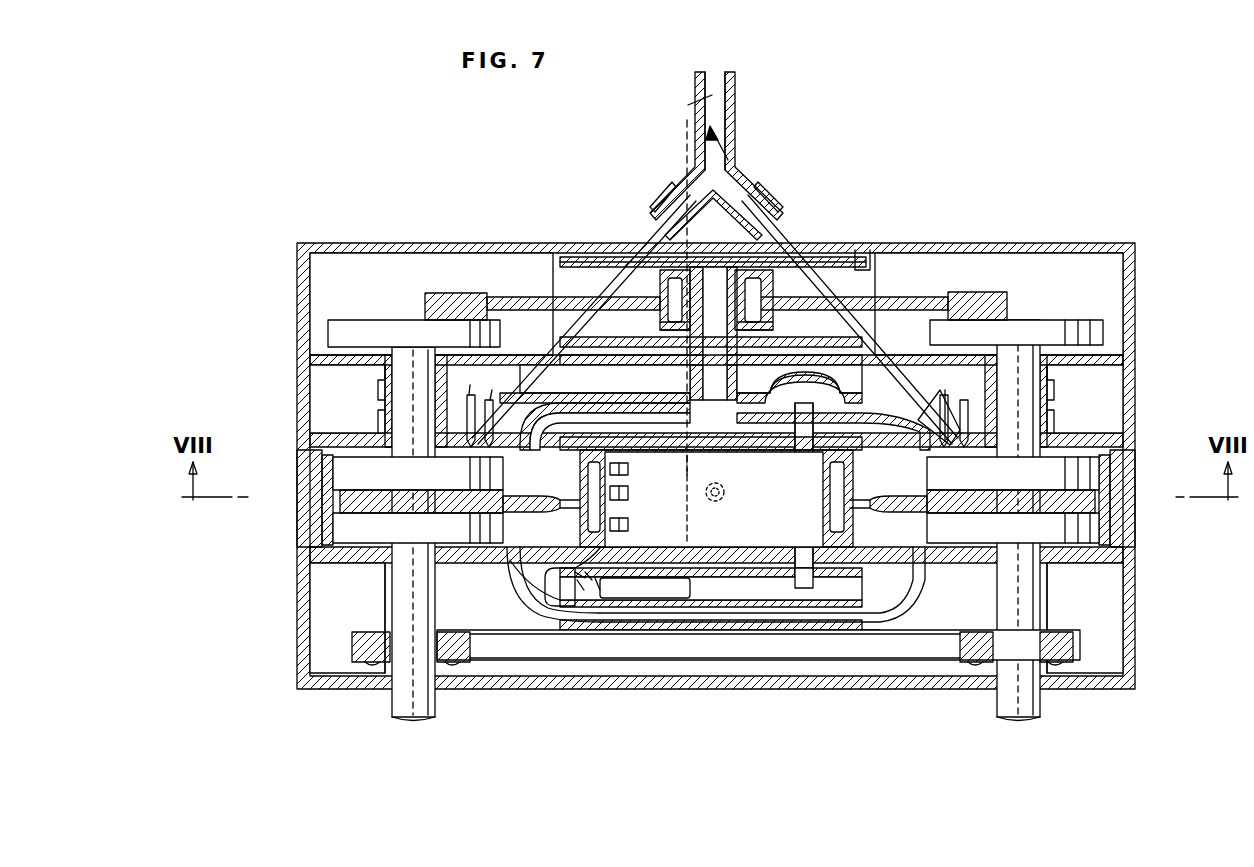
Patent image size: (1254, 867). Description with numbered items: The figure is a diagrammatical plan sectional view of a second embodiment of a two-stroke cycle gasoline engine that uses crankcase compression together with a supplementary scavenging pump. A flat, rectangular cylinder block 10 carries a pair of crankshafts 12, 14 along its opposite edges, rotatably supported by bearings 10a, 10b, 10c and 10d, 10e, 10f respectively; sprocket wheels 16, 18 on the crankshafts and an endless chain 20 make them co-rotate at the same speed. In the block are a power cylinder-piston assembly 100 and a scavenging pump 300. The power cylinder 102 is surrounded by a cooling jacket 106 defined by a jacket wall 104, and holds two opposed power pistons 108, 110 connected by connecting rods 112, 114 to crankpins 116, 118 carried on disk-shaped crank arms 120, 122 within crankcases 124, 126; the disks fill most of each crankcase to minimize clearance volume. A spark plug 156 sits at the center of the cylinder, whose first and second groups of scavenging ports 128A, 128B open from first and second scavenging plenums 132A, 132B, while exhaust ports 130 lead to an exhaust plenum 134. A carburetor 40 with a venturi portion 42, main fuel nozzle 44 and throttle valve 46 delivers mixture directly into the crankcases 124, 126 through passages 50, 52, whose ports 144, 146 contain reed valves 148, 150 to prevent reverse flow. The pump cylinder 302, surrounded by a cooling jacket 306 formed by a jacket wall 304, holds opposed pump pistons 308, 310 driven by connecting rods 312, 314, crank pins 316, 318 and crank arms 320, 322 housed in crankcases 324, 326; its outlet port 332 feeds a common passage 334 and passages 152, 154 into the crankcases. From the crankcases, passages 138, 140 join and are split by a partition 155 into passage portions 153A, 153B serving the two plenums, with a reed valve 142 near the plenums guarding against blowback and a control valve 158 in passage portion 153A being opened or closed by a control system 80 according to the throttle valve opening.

The cylinder block 10 is at (385, 244).
The bearing 10a is at (385, 418).
The bearing 10b is at (385, 384).
The bearing 10c is at (392, 676).
The bearing 10d is at (1049, 404).
The bearing 10e is at (1049, 372).
The bearing 10f is at (1040, 676).
The crankshaft 12 is at (430, 700).
The crankshaft 14 is at (1002, 700).
The sprocket wheel 16 is at (372, 640).
The sprocket wheel 18 is at (970, 640).
The endless chain 20 is at (910, 640).
The carburetor 40 is at (740, 100).
The venturi portion 42 is at (715, 82).
The main fuel nozzle 44 is at (692, 104).
The throttle valve 46 is at (722, 135).
The passage 50 is at (676, 196).
The passage 52 is at (756, 190).
The control system 80 is at (687, 160).
The power cylinder-piston assembly 100 is at (758, 607).
The power cylinder 102 is at (688, 452).
The jacket wall 104 is at (690, 578).
The cooling jacket 106 is at (636, 570).
The power piston 108 is at (614, 460).
The power piston 110 is at (798, 510).
The connecting rod 112 is at (398, 490).
The connecting rod 114 is at (996, 490).
The crankpin 116 is at (345, 504).
The crankpin 118 is at (1062, 500).
The crank arm 120 is at (322, 540).
The crank arm 122 is at (1105, 535).
The crankcase 124 is at (505, 547).
The crankcase 126 is at (925, 547).
The first group of scavenging ports 128A is at (628, 496).
The second group of scavenging ports 128B is at (626, 486).
The exhaust ports 130 is at (798, 486).
The first scavenging plenum 132A is at (645, 587).
The second scavenging plenum 132B is at (556, 587).
The exhaust plenum 134 is at (812, 580).
The passage 138 is at (548, 620).
The passage 140 is at (808, 622).
The reed valve 142 is at (600, 588).
The port 144 is at (492, 450).
The port 146 is at (943, 448).
The reed valve 148 is at (508, 412).
The reed valve 150 is at (925, 420).
The passage 152 is at (560, 412).
The passage 154 is at (858, 412).
The partition 155 is at (512, 565).
The spark plug 156 is at (728, 498).
The control valve 158 is at (600, 596).
The passage portion 153A is at (598, 595).
The passage portion 153B is at (598, 588).
The scavenging pump 300 is at (862, 256).
The pump cylinder 302 is at (770, 282).
The jacket wall 304 is at (830, 256).
The cooling jacket 306 is at (860, 250).
The pump piston 308 is at (662, 282).
The pump piston 310 is at (768, 326).
The connecting rod 312 is at (545, 298).
The connecting rod 314 is at (888, 300).
The crank pin 316 is at (443, 300).
The crank pin 318 is at (972, 298).
The crank arm 320 is at (398, 318).
The crank arm 322 is at (1020, 320).
The crankcase 324 is at (310, 286).
The crankcase 326 is at (1123, 270).
The outlet port 332 is at (665, 326).
The common passage 334 is at (692, 382).